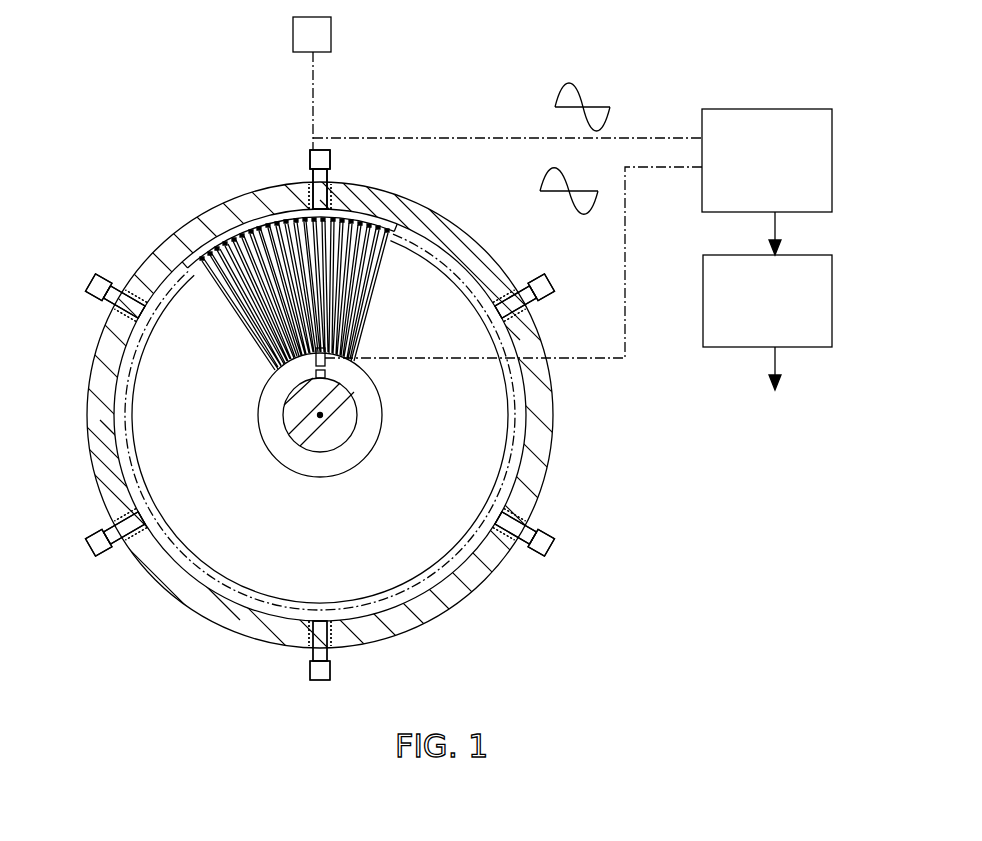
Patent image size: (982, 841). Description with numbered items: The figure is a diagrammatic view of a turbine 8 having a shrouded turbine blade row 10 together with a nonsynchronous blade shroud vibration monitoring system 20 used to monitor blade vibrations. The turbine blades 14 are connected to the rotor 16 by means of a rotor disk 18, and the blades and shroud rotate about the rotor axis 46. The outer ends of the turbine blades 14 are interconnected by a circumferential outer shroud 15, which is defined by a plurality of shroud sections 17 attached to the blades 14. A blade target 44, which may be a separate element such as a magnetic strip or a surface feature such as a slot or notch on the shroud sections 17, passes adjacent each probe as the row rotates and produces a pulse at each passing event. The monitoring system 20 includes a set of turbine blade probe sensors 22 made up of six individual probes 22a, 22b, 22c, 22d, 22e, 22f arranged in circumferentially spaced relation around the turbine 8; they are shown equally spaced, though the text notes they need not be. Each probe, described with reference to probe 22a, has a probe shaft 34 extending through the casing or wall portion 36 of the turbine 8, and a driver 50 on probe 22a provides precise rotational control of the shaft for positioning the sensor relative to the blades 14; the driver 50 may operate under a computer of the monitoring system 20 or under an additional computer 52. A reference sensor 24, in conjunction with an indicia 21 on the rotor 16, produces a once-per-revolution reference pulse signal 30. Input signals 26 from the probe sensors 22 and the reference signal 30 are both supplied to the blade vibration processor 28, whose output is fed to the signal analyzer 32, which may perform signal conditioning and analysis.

The turbine 8 is at (86, 382).
The shrouded turbine blade row 10 is at (376, 281).
The turbine blades 14 is at (265, 300).
The circumferential outer shroud 15 is at (213, 240).
The rotor 16 is at (284, 416).
The shroud sections 17 is at (380, 224).
The rotor disk 18 is at (294, 462).
The blade shroud vibration monitoring system 20 is at (803, 246).
The indicia 21 is at (330, 377).
The set of turbine blade probe sensors 22 is at (243, 114).
The probe 22a is at (309, 156).
The probe 22b is at (532, 273).
The probe 22c is at (547, 536).
The probe 22d is at (334, 673).
The probe 22e is at (110, 560).
The probe 22f is at (95, 291).
The reference sensor 24 is at (310, 360).
The input signals 26 is at (562, 138).
The blade vibration processor 28 is at (833, 135).
The reference pulse signal 30 is at (625, 196).
The signal analyzer 32 is at (833, 318).
The probe shaft 34 is at (307, 185).
The casing 36 is at (172, 250).
The blade target 44 is at (262, 224).
The rotor axis 46 is at (324, 452).
The driver 50 is at (308, 150).
The computer 52 is at (332, 36).